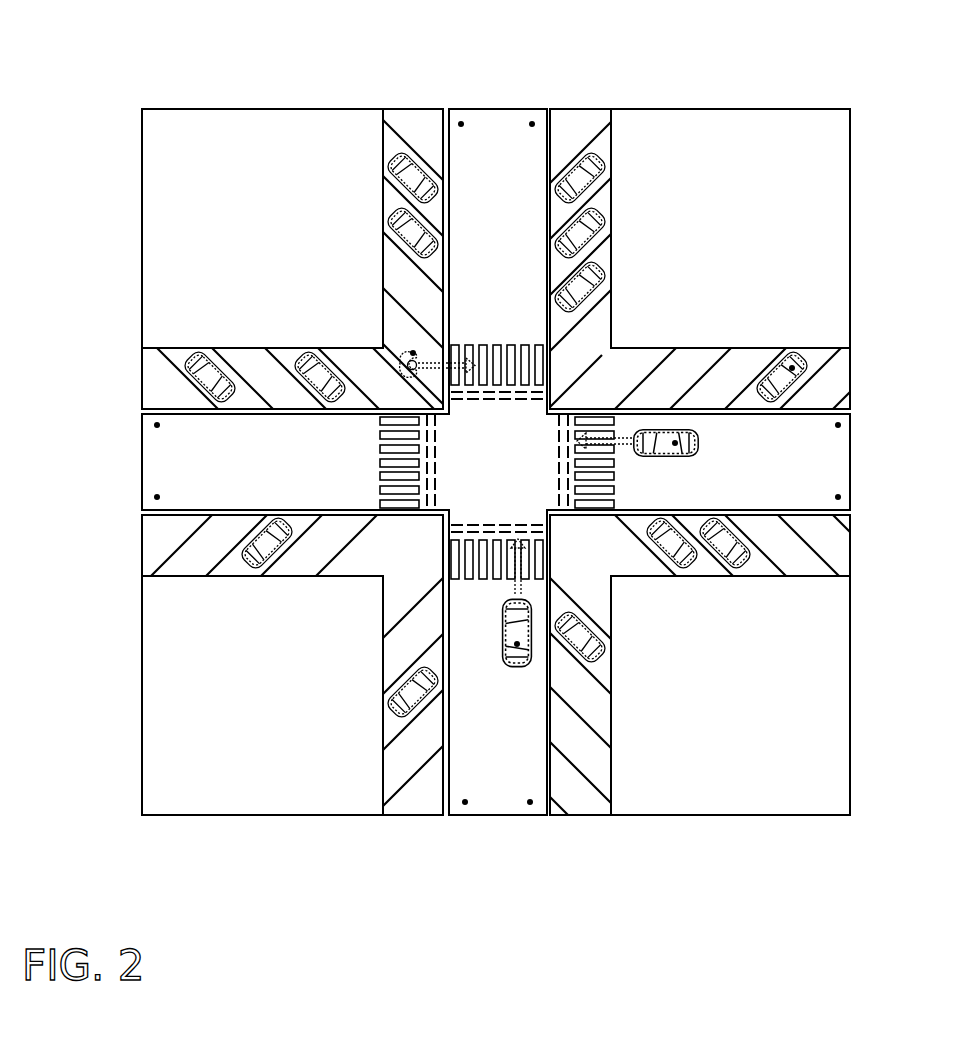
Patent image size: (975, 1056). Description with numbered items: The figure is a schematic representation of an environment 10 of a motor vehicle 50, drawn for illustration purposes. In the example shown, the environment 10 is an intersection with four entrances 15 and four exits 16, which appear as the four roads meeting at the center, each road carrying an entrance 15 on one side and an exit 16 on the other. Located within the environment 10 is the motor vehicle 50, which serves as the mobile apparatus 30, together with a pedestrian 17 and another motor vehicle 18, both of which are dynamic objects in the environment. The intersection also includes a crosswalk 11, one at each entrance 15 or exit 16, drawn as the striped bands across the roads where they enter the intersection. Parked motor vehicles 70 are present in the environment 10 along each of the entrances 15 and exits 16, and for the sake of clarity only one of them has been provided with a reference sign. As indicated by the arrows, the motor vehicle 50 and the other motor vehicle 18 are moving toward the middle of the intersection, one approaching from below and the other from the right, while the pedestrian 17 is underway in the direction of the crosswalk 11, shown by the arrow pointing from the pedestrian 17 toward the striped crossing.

The environment 10 is at (128, 97).
The crosswalk 11 is at (497, 362).
The entrance 15 is at (461, 124).
The exit 16 is at (532, 124).
The pedestrian 17 is at (255, 273).
The other motor vehicle 18 is at (692, 249).
The parked motor vehicle 70 is at (792, 368).
The mobile apparatus 30 is at (593, 731).
The motor vehicle 50 is at (517, 644).